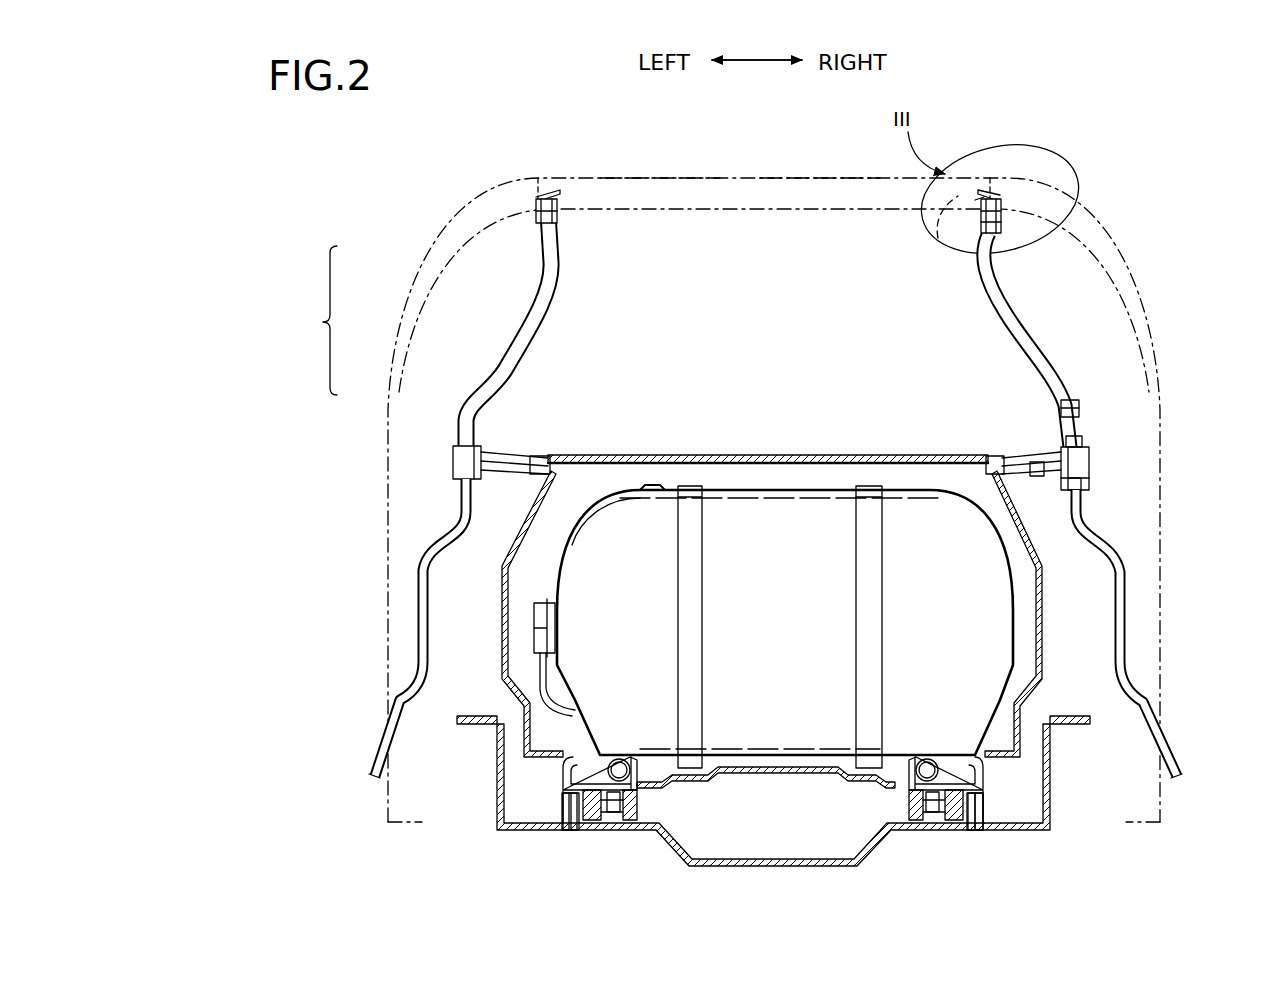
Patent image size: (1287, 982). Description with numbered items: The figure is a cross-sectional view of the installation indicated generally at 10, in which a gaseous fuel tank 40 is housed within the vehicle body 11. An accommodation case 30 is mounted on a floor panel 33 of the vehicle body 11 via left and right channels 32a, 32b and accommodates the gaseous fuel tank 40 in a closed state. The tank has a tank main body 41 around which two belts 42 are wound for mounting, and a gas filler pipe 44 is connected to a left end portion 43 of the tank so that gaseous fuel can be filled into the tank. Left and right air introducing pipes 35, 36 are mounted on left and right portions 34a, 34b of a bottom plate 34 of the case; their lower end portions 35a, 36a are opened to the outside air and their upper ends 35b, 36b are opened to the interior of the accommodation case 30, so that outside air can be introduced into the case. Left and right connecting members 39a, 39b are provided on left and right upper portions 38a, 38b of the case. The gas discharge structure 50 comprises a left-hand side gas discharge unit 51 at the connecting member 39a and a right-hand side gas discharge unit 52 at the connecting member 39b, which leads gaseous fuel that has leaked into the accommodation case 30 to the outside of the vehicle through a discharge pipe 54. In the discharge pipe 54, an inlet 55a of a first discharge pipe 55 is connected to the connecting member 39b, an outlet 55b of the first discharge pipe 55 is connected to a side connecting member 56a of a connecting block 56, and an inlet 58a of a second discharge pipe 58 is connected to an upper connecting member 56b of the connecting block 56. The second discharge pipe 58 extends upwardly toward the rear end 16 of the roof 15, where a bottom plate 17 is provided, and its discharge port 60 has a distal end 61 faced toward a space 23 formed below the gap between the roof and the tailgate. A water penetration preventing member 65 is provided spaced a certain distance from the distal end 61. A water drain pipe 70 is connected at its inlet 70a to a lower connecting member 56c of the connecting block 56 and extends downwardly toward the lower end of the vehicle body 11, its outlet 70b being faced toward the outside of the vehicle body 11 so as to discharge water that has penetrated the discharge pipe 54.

The vehicle body structure 10 is at (756, 500).
The vehicle body 11 is at (1165, 655).
The roof 15 is at (740, 176).
The rear end of the roof 16 is at (815, 178).
The bottom plate 17 is at (935, 236).
The space 23 is at (975, 198).
The accommodation case 30 is at (702, 637).
The left channel 32a is at (652, 836).
The right channel 32b is at (878, 832).
The floor panel 33 is at (773, 812).
The bottom plate 34 is at (830, 778).
The left portion of the bottom plate 34a is at (612, 806).
The right portion of the bottom plate 34b is at (935, 806).
The left air introducing pipe 35 is at (552, 775).
The lower end portion of left air introducing pipe 35a is at (566, 806).
The upper end of left air introducing pipe 35b is at (632, 760).
The right air introducing pipe 36 is at (986, 768).
The lower end portion of right air introducing pipe 36a is at (980, 808).
The upper end of right air introducing pipe 36b is at (924, 758).
The left upper portion 38a is at (592, 455).
The right upper portion 38b is at (930, 455).
The left connecting member 39a is at (548, 468).
The right connecting member 39b is at (998, 468).
The gaseous fuel tank 40 is at (785, 580).
The tank main body 41 is at (822, 498).
The belt 42 is at (688, 488).
The left end portion of the tank 43 is at (540, 620).
The gas filler pipe 44 is at (545, 703).
The gas discharge structure 50 is at (756, 500).
The left-hand side gas discharge unit 51 is at (786, 318).
The right-hand side gas discharge unit 52 is at (1017, 300).
The discharge pipe 54 is at (1172, 325).
The first discharge pipe 55 is at (711, 439).
The inlet of first discharge pipe 55a is at (1018, 470).
The outlet of first discharge pipe 55b is at (1056, 472).
The connecting block 56 is at (781, 482).
The side connecting member 56a is at (1078, 497).
The upper connecting member 56b is at (1084, 440).
The lower connecting member 56c is at (1084, 483).
The second discharge pipe 58 is at (524, 330).
The inlet of second discharge pipe 58a is at (1081, 402).
The discharge port 60 is at (815, 169).
The distal end 61 is at (562, 193).
The water penetration preventing member 65 is at (540, 193).
The water drain pipe 70 is at (760, 659).
The inlet of water drain pipe 70a is at (462, 488).
The outlet of water drain pipe 70b is at (370, 776).